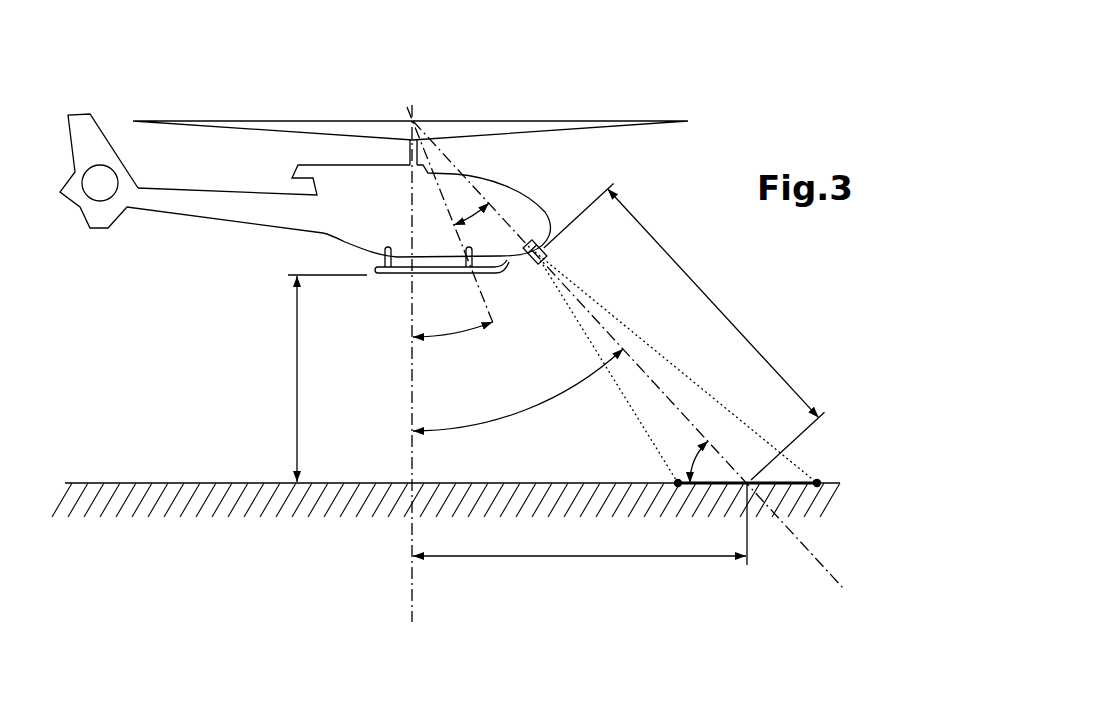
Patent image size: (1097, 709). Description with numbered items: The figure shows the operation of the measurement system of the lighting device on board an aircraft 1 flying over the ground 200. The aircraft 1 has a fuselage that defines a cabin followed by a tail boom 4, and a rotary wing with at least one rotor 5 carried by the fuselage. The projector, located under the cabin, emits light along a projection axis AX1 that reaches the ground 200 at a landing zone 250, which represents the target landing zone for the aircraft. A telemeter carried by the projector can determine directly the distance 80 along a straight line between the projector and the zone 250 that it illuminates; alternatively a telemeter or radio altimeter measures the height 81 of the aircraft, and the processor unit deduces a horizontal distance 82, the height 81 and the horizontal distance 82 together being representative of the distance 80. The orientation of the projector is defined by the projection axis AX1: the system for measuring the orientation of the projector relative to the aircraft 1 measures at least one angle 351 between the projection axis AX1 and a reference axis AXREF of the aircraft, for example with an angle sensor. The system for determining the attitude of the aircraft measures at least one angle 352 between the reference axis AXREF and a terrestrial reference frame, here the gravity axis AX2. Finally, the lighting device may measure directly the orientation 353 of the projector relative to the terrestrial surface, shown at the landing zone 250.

The aircraft 1 is at (177, 81).
The tail boom 4 is at (210, 192).
The rotor 5 is at (579, 102).
The distance along a straight line 80 is at (684, 332).
The height 81 is at (316, 378).
The horizontal distance 82 is at (580, 524).
The ground 200 is at (124, 482).
The landing zone 250 is at (776, 473).
The angle between projection axis and reference axis 351 is at (474, 212).
The angle between reference axis and terrestrial reference frame 352 is at (453, 343).
The orientation of the projector relative to the terrestrial surface 353 is at (690, 460).
The projection axis AX1 is at (816, 558).
The gravity axis AX2 is at (411, 605).
The reference axis of the aircraft AXREF is at (484, 300).